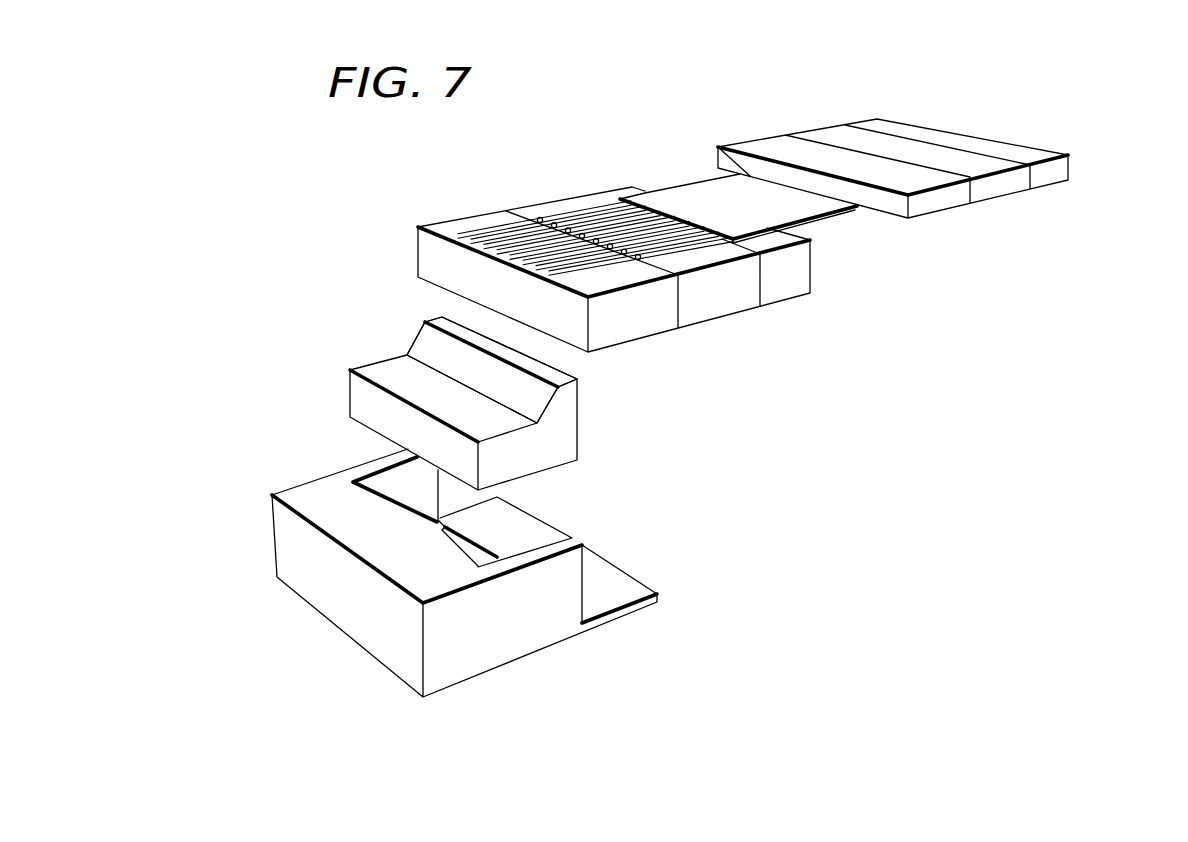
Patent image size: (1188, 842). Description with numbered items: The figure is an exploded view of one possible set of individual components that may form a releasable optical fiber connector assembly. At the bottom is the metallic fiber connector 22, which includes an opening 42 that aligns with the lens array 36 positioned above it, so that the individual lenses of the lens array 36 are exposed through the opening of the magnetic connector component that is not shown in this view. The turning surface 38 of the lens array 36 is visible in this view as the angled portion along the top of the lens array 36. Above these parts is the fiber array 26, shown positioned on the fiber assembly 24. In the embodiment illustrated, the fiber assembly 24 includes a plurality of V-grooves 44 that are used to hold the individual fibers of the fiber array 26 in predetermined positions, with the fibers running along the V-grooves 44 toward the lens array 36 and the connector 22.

The metallic fiber connector 22 is at (333, 599).
The fiber assembly 24 is at (767, 235).
The fiber array 26 is at (702, 192).
The lens array 36 is at (357, 397).
The turning surface 38 is at (433, 346).
The opening 42 is at (482, 550).
The V-grooves 44 is at (460, 237).